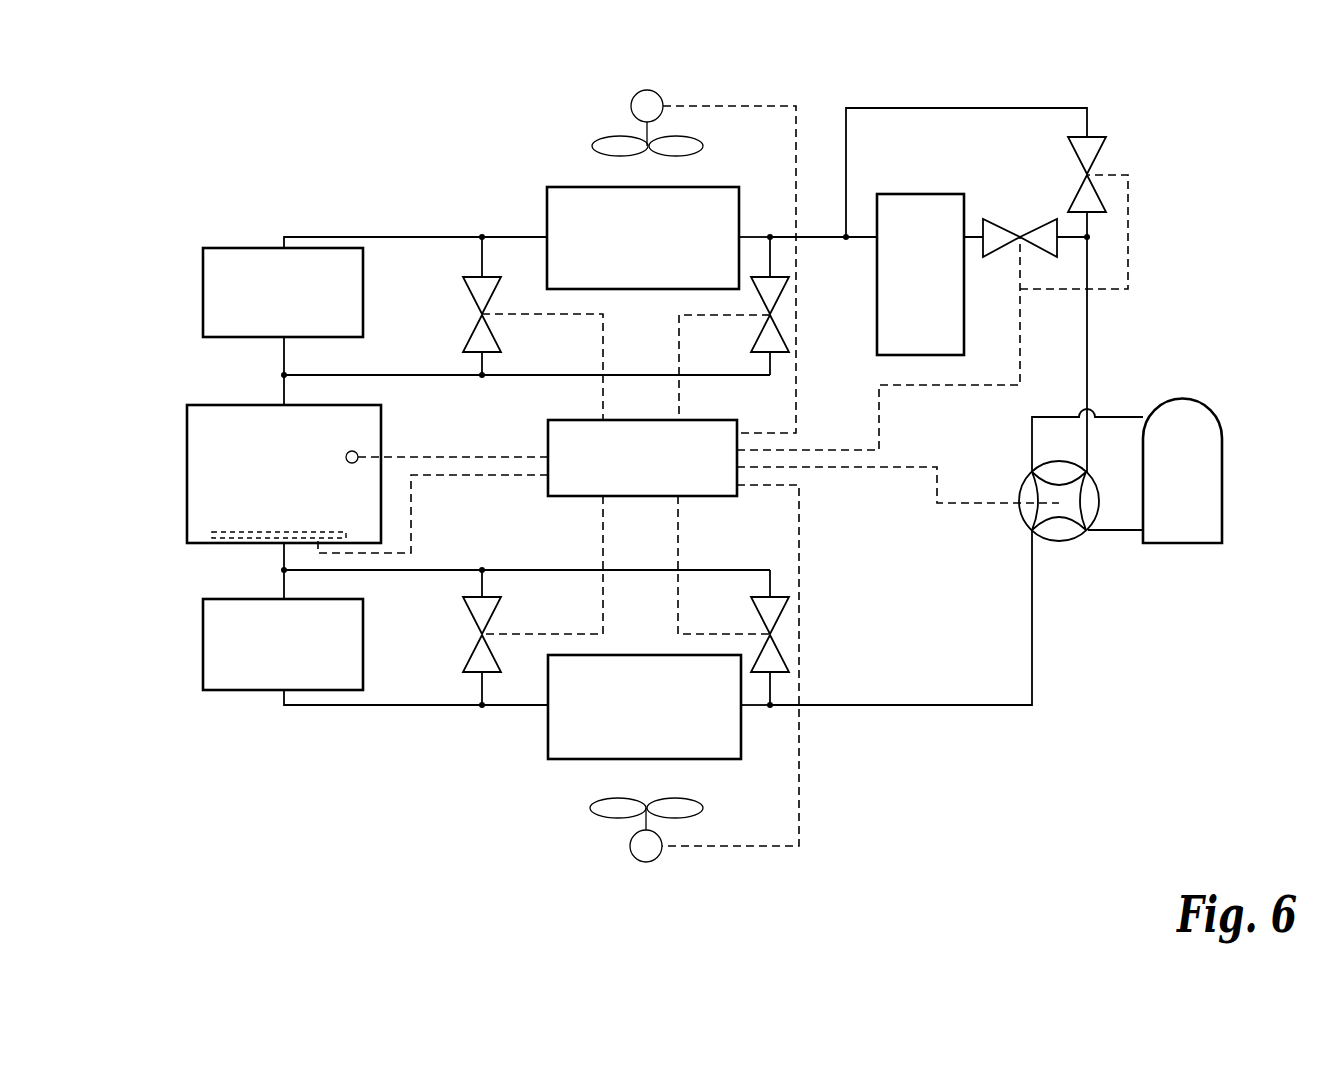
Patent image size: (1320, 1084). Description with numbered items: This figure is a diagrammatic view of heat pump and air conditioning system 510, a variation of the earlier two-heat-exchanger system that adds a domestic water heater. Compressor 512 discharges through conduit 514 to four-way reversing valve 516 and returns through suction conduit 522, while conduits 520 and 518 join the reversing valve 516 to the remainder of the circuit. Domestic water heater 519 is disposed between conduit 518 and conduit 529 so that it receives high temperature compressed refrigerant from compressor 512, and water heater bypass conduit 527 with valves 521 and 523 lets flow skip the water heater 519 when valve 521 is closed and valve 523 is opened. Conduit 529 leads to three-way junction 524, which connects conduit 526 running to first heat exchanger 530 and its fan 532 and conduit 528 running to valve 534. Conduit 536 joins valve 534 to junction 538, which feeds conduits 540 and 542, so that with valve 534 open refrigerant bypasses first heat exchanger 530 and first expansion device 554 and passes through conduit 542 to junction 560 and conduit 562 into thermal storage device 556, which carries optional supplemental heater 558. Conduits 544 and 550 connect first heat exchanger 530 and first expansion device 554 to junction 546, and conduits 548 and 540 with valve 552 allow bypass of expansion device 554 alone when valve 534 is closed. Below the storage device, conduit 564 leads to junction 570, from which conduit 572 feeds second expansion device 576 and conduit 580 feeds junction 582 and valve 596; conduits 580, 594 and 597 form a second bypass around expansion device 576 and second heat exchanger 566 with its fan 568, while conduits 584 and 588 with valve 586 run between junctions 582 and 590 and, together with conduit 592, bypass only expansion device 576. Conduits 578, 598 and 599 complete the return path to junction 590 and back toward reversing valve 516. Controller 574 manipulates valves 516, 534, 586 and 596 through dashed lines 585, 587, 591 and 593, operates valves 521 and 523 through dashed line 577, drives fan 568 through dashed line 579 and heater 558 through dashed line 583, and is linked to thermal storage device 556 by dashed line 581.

The heat pump and air conditioning system 510 is at (1122, 96).
The compressor 512 is at (1200, 545).
The discharge line 514 is at (1113, 417).
The four-way reversing valve 516 is at (1061, 557).
The conduit 518 is at (1087, 315).
The domestic water heater 519 is at (915, 194).
The suction line 520 is at (1032, 675).
The valve 521 is at (1012, 230).
The suction line 522 is at (1115, 535).
The valve 523 is at (1105, 160).
The three-way junction 524 is at (772, 243).
The conduit 526 is at (745, 237).
The water heater bypass conduit 527 is at (970, 108).
The conduit 528 is at (778, 270).
The conduit 529 is at (812, 237).
The first heat exchanger 530 is at (690, 187).
The fan 532 is at (627, 110).
The valve 534 is at (760, 330).
The conduit 536 is at (606, 375).
The junction 538 is at (484, 380).
The conduit 540 is at (482, 363).
The conduit 542 is at (392, 375).
The refrigerant line 544 is at (528, 237).
The junction 546 is at (482, 237).
The conduit 548 is at (482, 268).
The refrigerant line 550 is at (340, 237).
The valve 552 is at (470, 330).
The first expansion device 554 is at (363, 300).
The thermal storage device 556 is at (381, 440).
The supplemental heater 558 is at (285, 350).
The junction 560 is at (284, 375).
The conduit 562 is at (285, 390).
The conduit 564 is at (284, 553).
The second heat exchanger 566 is at (722, 760).
The fan 568 is at (620, 834).
The junction 570 is at (284, 570).
The refrigerant line 572 is at (285, 585).
The controller 574 is at (702, 496).
The second expansion device 576 is at (363, 655).
The dashed line 577 is at (798, 160).
The refrigerant line 578 is at (345, 708).
The dashed line 579 is at (800, 530).
The conduit 580 is at (436, 570).
The controller 581 is at (505, 457).
The junction 582 is at (482, 570).
The dashed line 583 is at (418, 480).
The conduit 584 is at (482, 580).
The dashed line 585 is at (897, 467).
The valve 586 is at (470, 655).
The dashed line 587 is at (680, 360).
The conduit 588 is at (482, 690).
The junction 590 is at (480, 708).
The dashed line 591 is at (590, 520).
The conduit 592 is at (505, 708).
The dashed line 593 is at (688, 520).
The conduit 594 is at (655, 570).
The valve 596 is at (780, 635).
The conduit 597 is at (772, 680).
The junction 598 is at (778, 710).
The refrigerant line 599 is at (755, 710).